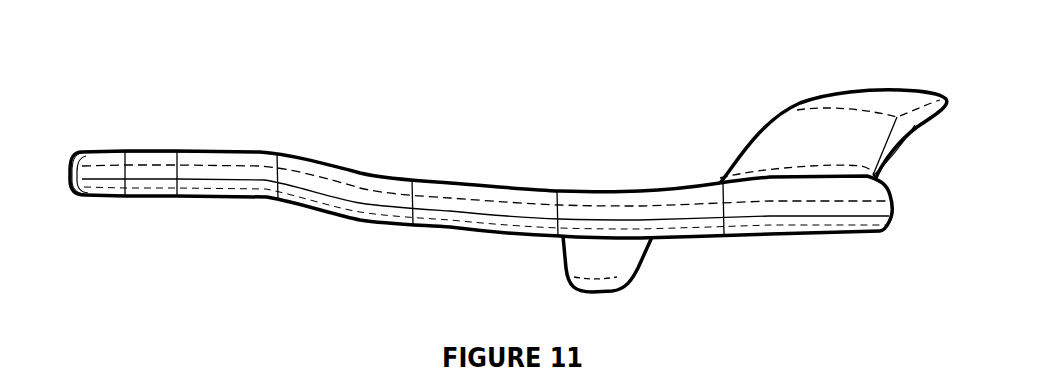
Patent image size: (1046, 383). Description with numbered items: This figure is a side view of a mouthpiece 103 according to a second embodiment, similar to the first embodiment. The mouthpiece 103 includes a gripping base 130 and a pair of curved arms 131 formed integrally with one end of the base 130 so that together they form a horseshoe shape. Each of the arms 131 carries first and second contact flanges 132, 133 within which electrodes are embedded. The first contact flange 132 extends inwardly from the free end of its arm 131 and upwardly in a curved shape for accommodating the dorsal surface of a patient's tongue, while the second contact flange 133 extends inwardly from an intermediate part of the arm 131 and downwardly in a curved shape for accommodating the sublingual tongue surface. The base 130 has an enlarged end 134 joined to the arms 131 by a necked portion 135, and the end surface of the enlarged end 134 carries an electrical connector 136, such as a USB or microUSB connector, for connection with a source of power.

The mouthpiece 103 is at (219, 73).
The gripping base 130 is at (204, 294).
The curved arms 131 is at (452, 183).
The first contact flange 132 is at (853, 92).
The second contact flange 133 is at (610, 277).
The enlarged end 134 is at (137, 198).
The necked portion 135 is at (253, 152).
The electrical connector 136 is at (68, 197).